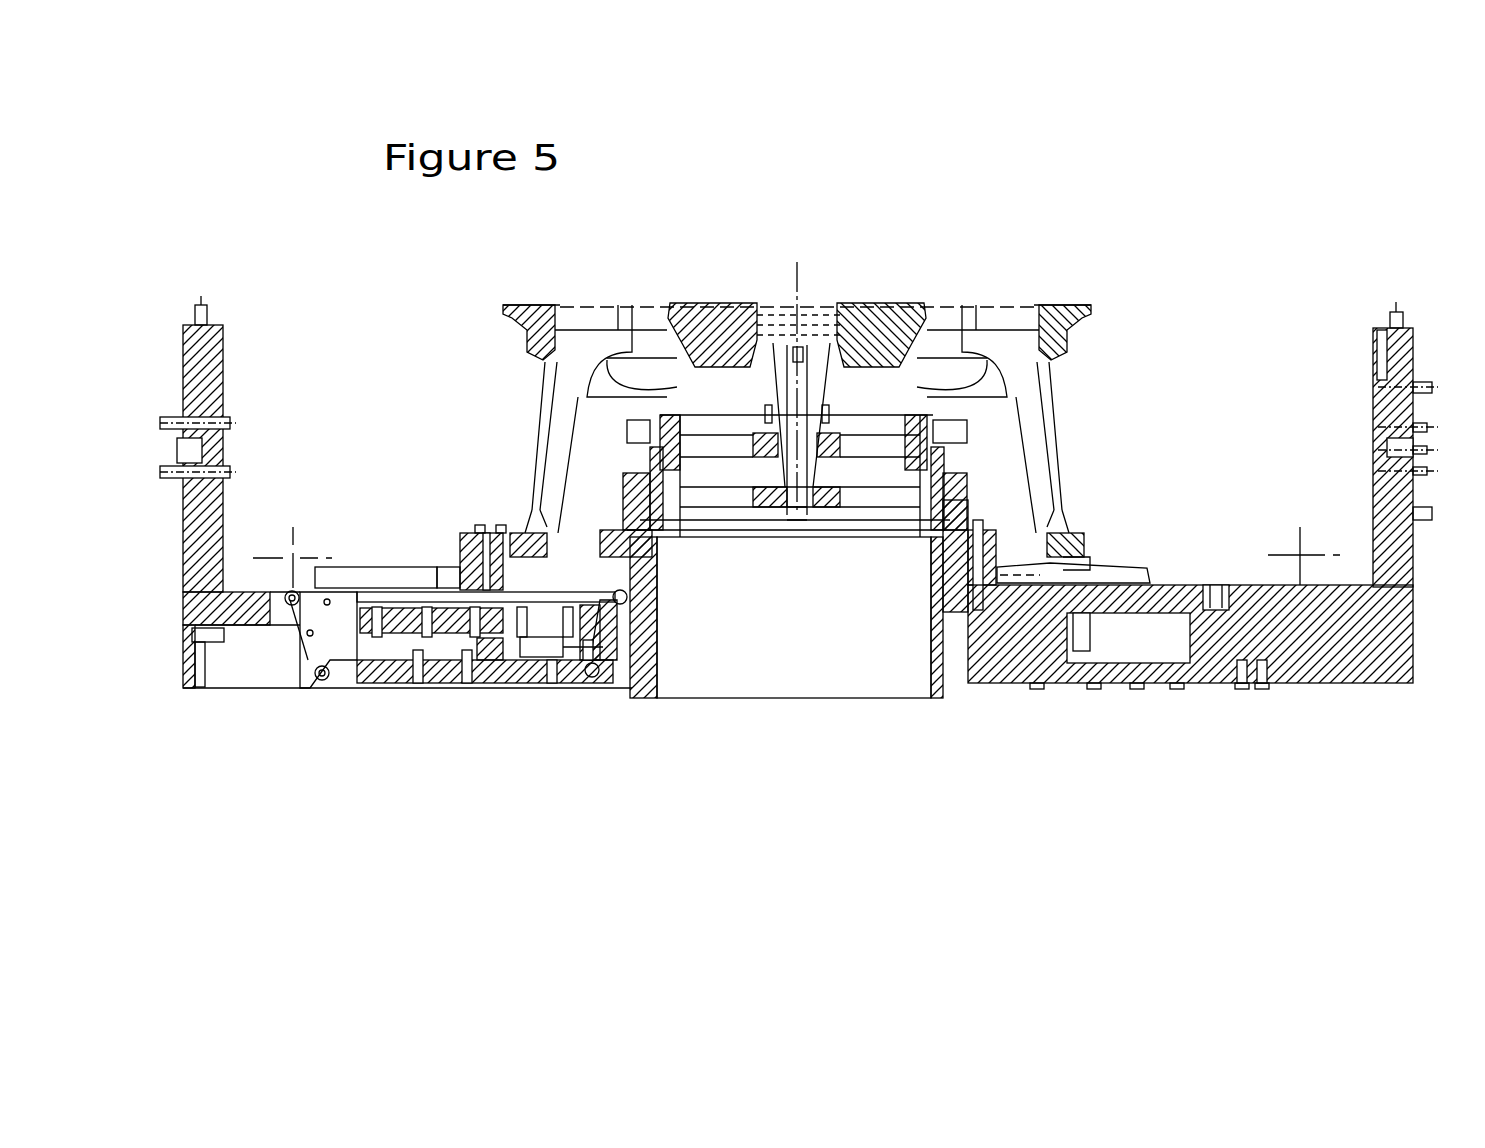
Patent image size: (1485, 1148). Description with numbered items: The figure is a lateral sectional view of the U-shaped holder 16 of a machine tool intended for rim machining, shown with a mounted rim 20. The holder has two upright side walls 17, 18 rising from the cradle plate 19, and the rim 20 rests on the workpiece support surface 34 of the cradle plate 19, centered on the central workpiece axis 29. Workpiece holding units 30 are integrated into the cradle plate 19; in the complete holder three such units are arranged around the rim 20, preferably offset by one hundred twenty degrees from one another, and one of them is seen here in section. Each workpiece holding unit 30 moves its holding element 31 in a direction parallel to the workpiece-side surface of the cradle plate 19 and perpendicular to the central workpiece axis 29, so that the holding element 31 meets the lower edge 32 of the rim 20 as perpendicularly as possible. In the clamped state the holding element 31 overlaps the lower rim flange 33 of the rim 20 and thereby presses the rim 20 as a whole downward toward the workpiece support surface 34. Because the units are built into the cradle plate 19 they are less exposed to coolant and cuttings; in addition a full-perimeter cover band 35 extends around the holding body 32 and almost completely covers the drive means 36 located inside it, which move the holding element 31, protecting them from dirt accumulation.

The U-shaped holder 16 is at (793, 518).
The left side wall 17 is at (207, 517).
The right side wall 18 is at (1413, 548).
The cradle plate 19 is at (1302, 660).
The rim 20 is at (1040, 325).
The central workpiece axis 29 is at (797, 280).
The workpiece holding unit 30 is at (398, 550).
The holding element 31 is at (515, 520).
The holding body 32 is at (532, 657).
The lower rim flange 33 is at (1092, 527).
The workpiece support surface 34 is at (1110, 575).
The cover band 35 is at (293, 635).
The drive means 36 is at (393, 655).